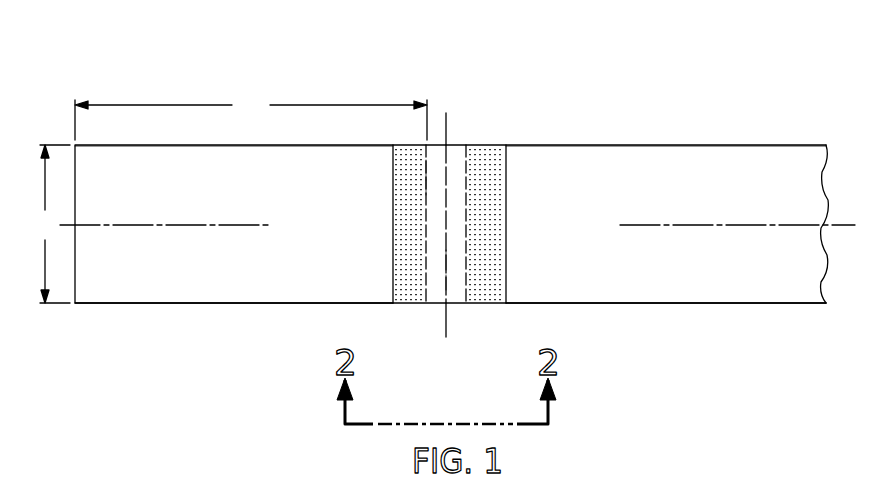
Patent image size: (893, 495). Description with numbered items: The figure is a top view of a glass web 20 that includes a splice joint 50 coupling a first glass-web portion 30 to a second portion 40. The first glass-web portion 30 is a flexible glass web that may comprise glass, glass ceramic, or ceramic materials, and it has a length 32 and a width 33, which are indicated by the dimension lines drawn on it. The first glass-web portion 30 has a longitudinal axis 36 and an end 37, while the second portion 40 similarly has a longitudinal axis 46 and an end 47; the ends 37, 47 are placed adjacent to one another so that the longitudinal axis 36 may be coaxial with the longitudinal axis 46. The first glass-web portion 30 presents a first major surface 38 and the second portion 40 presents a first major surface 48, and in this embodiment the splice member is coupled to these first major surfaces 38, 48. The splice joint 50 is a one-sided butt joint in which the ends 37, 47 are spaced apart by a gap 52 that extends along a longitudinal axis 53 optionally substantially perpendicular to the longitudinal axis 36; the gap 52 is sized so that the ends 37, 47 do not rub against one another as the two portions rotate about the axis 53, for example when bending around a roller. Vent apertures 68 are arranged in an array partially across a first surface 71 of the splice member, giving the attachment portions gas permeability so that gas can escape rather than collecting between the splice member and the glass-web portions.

The glass web 20 is at (662, 121).
The first glass-web portion 30 is at (222, 305).
The length 32 is at (251, 116).
The width 33 is at (51, 224).
The longitudinal axis 36 is at (175, 225).
The end 37 is at (427, 168).
The first major surface 38 is at (231, 278).
The second portion 40 is at (708, 305).
The longitudinal axis 46 is at (690, 224).
The end 47 is at (467, 282).
The first major surface 48 is at (694, 277).
The splice joint 50 is at (421, 310).
The gap 52 is at (453, 260).
The longitudinal axis 53 is at (494, 225).
The vent apertures 68 is at (409, 212).
The first surface 71 is at (437, 188).